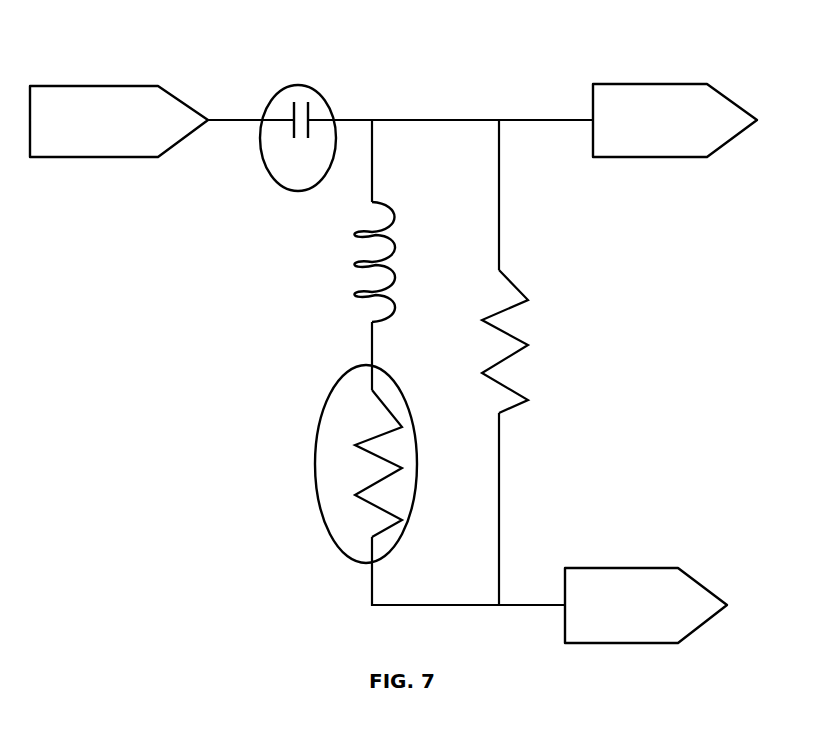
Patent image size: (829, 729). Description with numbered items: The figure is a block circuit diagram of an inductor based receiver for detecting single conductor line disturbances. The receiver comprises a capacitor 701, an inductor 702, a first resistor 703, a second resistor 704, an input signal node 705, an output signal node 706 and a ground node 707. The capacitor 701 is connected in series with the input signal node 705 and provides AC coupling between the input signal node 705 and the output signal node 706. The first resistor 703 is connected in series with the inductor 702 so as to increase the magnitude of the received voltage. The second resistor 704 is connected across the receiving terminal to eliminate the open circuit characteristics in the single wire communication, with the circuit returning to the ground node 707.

The capacitor (C1) 701 is at (312, 87).
The inductor (L1) 702 is at (355, 263).
The resistor (R1) 703 is at (363, 452).
The resistor (R2) 704 is at (518, 292).
The input signal node (Rx_in) 705 is at (135, 157).
The output signal node (Rx_out) 706 is at (690, 157).
The ground node (Rx_Vss) 707 is at (652, 568).